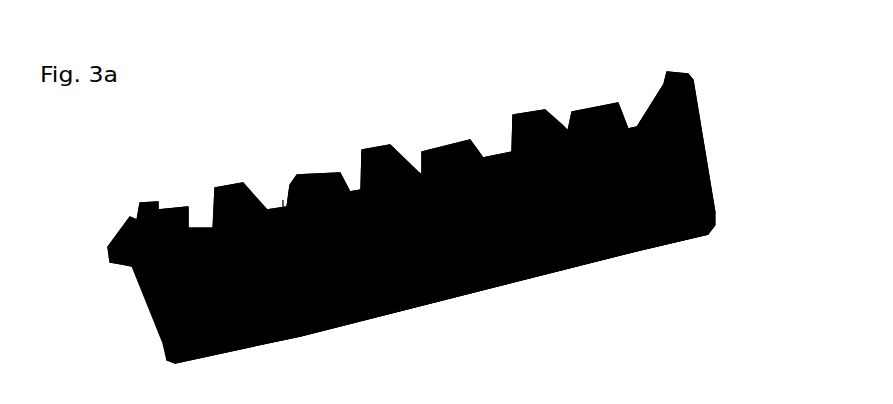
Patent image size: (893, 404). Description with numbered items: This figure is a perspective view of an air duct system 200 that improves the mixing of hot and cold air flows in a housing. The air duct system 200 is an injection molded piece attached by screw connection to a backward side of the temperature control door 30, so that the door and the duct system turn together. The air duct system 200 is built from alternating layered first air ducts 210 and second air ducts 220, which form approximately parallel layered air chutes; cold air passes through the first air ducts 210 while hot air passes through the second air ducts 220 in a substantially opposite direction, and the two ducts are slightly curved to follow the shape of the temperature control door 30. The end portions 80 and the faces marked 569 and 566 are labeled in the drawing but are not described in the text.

The air duct system 200 is at (626, 112).
The first air ducts 210 is at (187, 210).
The second air ducts 220 is at (323, 320).
The end portions 80 is at (132, 213).
The temperature control door 30 is at (685, 243).
The front face 569 is at (283, 197).
The rear face 566 is at (508, 153).